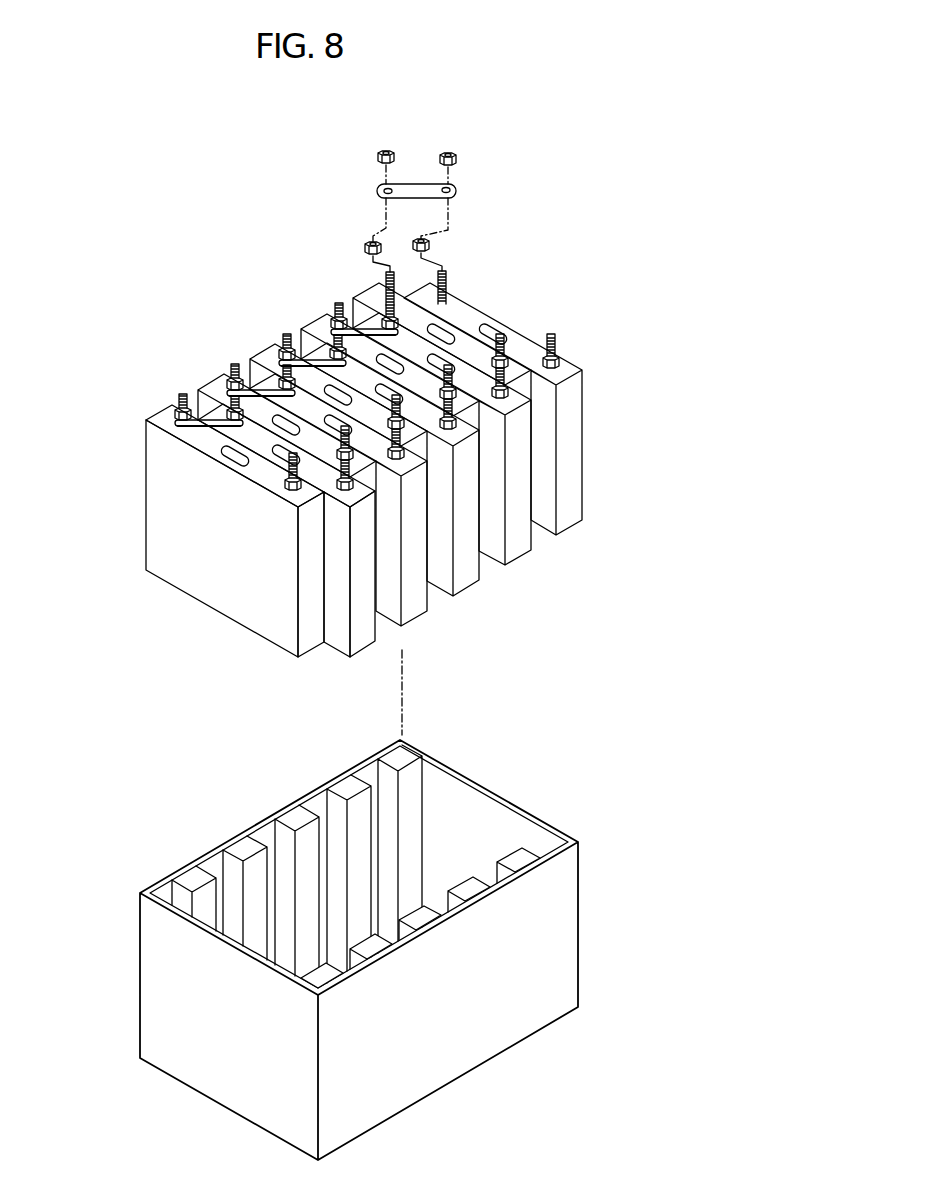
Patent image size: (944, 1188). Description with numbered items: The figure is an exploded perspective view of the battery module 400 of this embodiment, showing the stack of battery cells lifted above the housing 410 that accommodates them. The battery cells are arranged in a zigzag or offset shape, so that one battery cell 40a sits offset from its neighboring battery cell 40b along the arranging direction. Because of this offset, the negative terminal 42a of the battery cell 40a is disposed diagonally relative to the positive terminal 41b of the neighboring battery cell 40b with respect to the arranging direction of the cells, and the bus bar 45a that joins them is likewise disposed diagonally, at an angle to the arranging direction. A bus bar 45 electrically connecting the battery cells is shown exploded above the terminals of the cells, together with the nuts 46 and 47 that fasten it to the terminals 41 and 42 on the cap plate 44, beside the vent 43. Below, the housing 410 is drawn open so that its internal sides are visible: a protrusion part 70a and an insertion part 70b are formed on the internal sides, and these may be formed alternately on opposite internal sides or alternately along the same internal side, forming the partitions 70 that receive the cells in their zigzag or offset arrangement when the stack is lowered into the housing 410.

The battery module 400 is at (126, 213).
The battery cell 40a is at (311, 630).
The neighboring battery cell 40b is at (357, 625).
The first electrode terminal 41 is at (445, 284).
The positive terminal 41b is at (230, 390).
The second electrode terminal 42 is at (553, 342).
The negative terminal 42a is at (178, 395).
The vent 43 is at (498, 330).
The cap plate 44 is at (473, 320).
The bus bar 45 is at (458, 193).
The bus bar 45a is at (213, 423).
The nut 46 is at (458, 159).
The nut 47 is at (432, 246).
The partition 70 is at (459, 806).
The protrusion part 70a is at (518, 864).
The insertion part 70b is at (553, 838).
The housing 410 is at (560, 975).